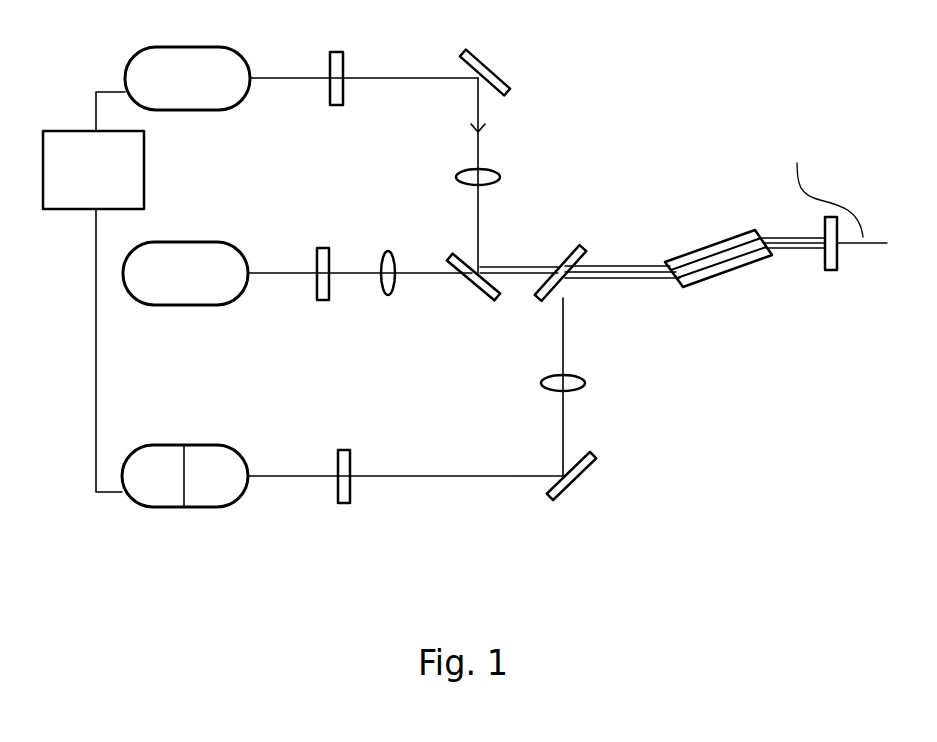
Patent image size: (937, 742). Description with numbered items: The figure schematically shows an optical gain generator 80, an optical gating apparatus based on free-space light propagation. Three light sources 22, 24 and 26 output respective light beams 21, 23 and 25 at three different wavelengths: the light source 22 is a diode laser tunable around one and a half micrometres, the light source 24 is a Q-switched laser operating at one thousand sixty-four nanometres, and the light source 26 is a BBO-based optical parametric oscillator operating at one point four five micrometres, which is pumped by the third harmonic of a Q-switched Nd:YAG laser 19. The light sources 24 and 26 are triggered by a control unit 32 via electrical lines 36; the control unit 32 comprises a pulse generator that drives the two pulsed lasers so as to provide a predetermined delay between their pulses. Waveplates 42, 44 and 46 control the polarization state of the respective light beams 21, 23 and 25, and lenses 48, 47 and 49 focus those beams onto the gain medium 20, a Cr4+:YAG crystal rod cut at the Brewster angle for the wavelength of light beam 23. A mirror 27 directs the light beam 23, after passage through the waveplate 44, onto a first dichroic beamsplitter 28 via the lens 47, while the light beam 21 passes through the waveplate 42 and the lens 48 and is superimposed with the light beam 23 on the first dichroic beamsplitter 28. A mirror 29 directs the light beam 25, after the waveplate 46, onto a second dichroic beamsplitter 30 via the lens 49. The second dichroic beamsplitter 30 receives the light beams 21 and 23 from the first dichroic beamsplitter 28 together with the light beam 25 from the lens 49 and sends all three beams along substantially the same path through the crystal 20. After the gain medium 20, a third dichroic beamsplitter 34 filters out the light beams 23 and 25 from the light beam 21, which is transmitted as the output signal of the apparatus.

The Q-switched Nd:YAG laser 19 is at (148, 507).
The gain medium 20 is at (727, 270).
The light beam 21 is at (258, 273).
The light source 22 is at (183, 305).
The light beam 23 is at (284, 78).
The light source 24 is at (182, 47).
The light beam 25 is at (295, 476).
The light source 26 is at (228, 507).
The mirror 27 is at (500, 70).
The first dichroic beamsplitter 28 is at (452, 258).
The mirror 29 is at (578, 483).
The second dichroic beamsplitter 30 is at (565, 252).
The control unit 32 is at (144, 181).
The third dichroic beamsplitter 34 is at (838, 270).
The electrical lines 36 is at (96, 105).
The waveplate 42 is at (317, 283).
The waveplate 44 is at (343, 62).
The waveplate 46 is at (350, 462).
The lens 47 is at (500, 175).
The lens 48 is at (395, 287).
The lens 49 is at (586, 380).
The optical gain generator 80 is at (740, 500).